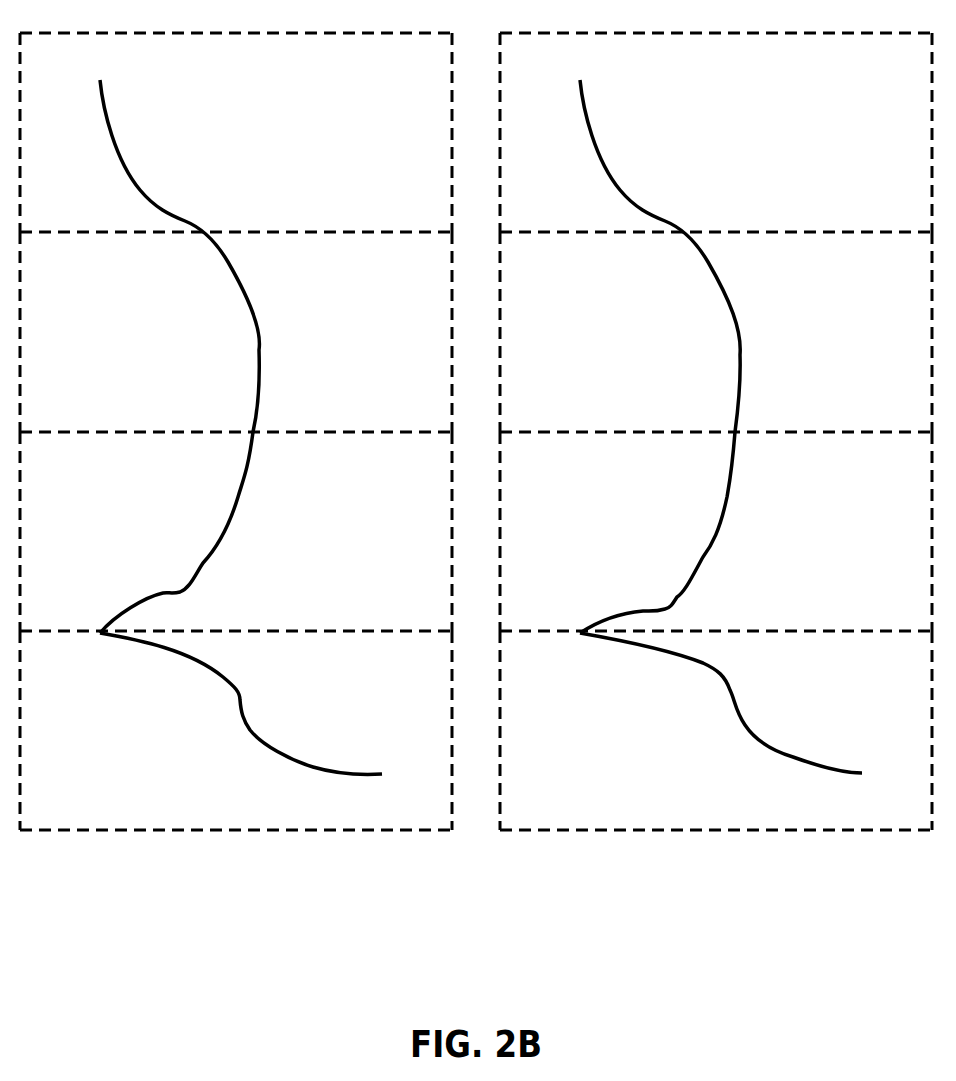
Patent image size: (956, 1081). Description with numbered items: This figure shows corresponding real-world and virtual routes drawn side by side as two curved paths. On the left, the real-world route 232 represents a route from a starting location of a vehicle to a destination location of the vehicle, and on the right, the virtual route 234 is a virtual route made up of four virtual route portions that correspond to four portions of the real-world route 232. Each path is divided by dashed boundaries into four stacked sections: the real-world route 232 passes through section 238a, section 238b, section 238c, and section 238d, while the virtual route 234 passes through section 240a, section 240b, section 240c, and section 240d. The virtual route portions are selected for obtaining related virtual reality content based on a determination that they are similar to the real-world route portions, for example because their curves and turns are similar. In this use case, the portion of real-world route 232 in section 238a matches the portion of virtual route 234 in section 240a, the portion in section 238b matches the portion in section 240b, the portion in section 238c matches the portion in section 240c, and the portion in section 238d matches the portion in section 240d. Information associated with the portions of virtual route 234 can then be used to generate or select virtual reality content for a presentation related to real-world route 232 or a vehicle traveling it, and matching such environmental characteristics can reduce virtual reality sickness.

The real-world route 232 is at (106, 125).
The virtual route 234 is at (586, 125).
The section 238a is at (437, 73).
The section 238b is at (437, 272).
The section 238c is at (437, 472).
The section 238d is at (437, 670).
The section 240a is at (917, 73).
The section 240b is at (917, 272).
The section 240c is at (917, 472).
The section 240d is at (917, 670).